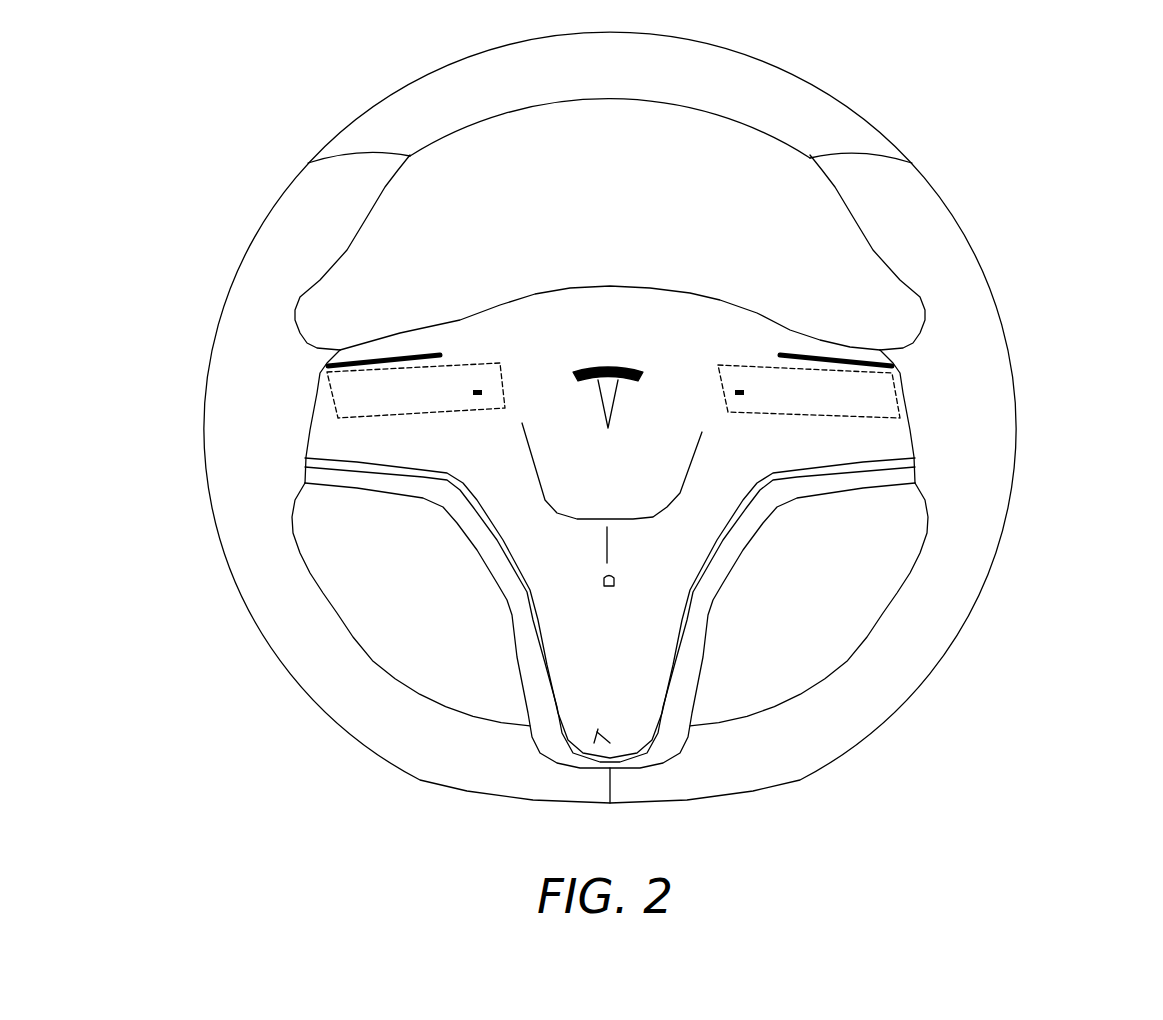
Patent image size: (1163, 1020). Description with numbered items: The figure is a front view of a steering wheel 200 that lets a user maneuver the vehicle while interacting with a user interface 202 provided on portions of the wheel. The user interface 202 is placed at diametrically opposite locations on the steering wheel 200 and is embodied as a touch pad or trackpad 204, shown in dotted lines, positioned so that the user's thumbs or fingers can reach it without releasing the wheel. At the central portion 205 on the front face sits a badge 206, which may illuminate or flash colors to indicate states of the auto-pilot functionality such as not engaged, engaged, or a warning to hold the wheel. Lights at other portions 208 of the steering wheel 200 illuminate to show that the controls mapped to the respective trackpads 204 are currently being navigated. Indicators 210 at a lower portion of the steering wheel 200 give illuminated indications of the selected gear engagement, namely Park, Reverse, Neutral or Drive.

The steering wheel 200 is at (681, 417).
The user interface 202 is at (606, 398).
The trackpad 204 is at (607, 394).
The central portion 205 is at (822, 290).
The badge 206 is at (853, 334).
The other portions 208 is at (607, 342).
The indicators 210 is at (532, 687).